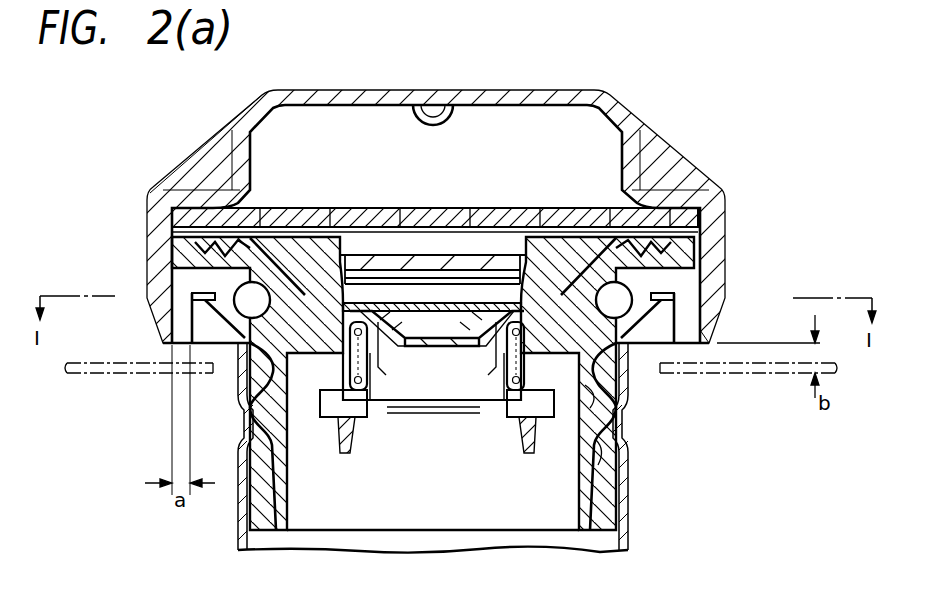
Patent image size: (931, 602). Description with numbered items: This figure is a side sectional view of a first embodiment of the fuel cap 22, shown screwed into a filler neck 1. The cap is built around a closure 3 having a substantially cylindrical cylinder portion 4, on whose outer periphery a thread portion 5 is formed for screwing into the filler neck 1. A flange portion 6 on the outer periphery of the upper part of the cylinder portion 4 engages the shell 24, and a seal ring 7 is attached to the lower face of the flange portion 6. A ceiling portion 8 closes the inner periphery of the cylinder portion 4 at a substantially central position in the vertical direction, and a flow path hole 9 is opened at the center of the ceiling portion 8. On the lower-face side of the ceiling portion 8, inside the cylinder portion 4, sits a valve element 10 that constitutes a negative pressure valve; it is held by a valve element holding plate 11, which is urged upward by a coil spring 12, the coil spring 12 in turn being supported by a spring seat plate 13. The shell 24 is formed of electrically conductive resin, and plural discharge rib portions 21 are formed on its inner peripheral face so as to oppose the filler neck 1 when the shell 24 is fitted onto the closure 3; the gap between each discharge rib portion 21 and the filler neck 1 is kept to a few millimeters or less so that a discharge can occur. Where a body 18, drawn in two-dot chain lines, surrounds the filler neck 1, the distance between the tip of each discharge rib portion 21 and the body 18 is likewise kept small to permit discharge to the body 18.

The filler neck 1 is at (238, 503).
The closure 3 is at (263, 510).
The cylinder portion 4 is at (583, 392).
The thread portion 5 is at (602, 453).
The flange portion 6 is at (187, 243).
The seal ring 7 is at (707, 285).
The ceiling portion 8 is at (328, 282).
The flow path hole 9 is at (433, 297).
The valve element 10 is at (457, 333).
The valve element holding plate 11 is at (387, 370).
The coil spring 12 is at (520, 412).
The spring seat plate 13 is at (547, 413).
The body 18 is at (100, 376).
The discharge rib portions 21 is at (710, 307).
The fuel cap 22 is at (640, 98).
The shell 24 is at (252, 113).